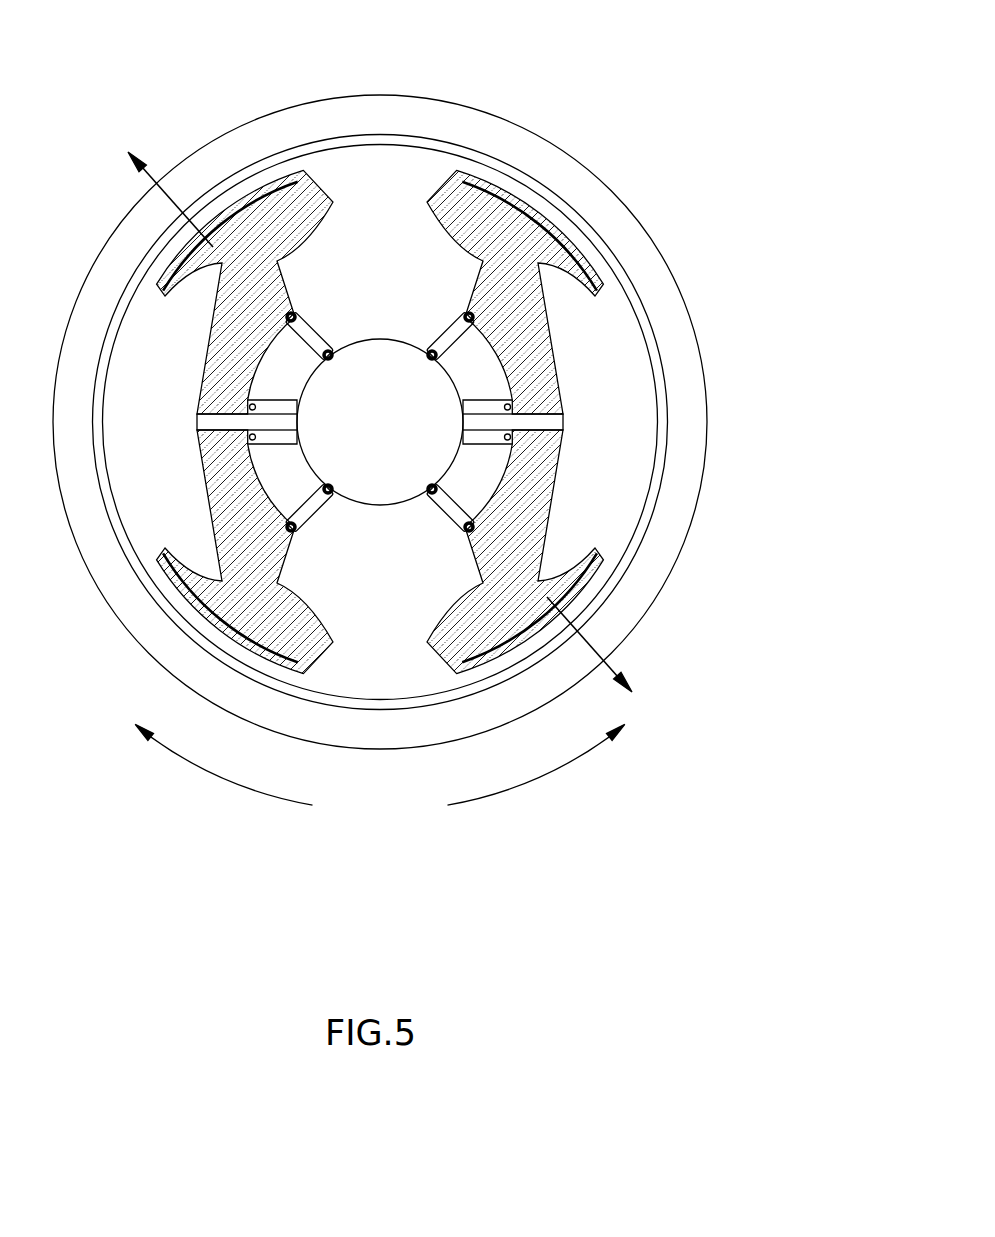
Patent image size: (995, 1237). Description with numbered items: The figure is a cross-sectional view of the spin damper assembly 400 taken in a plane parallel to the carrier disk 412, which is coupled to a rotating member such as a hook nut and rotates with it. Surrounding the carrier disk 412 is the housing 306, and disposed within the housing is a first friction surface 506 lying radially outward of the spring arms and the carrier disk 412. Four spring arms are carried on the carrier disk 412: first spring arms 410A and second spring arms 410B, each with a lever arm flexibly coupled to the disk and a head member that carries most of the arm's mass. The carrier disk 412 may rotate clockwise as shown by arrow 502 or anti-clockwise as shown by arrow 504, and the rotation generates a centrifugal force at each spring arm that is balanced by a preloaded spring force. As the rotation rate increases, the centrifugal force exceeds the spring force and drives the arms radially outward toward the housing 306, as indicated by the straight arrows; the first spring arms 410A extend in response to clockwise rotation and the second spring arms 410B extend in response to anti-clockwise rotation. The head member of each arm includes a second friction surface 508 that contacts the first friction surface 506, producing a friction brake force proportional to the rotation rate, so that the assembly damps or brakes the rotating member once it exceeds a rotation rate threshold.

The spin damper assembly 400 is at (647, 111).
The housing 306 is at (697, 328).
The first friction surface 506 is at (99, 476).
The first spring arms 410A is at (283, 262).
The second spring arms 410B is at (492, 267).
The carrier disk 412 is at (626, 402).
The second friction surface 508 is at (165, 572).
The arrow indicating clockwise direction 502 is at (200, 768).
The arrow indicating anti-clockwise direction 504 is at (557, 770).